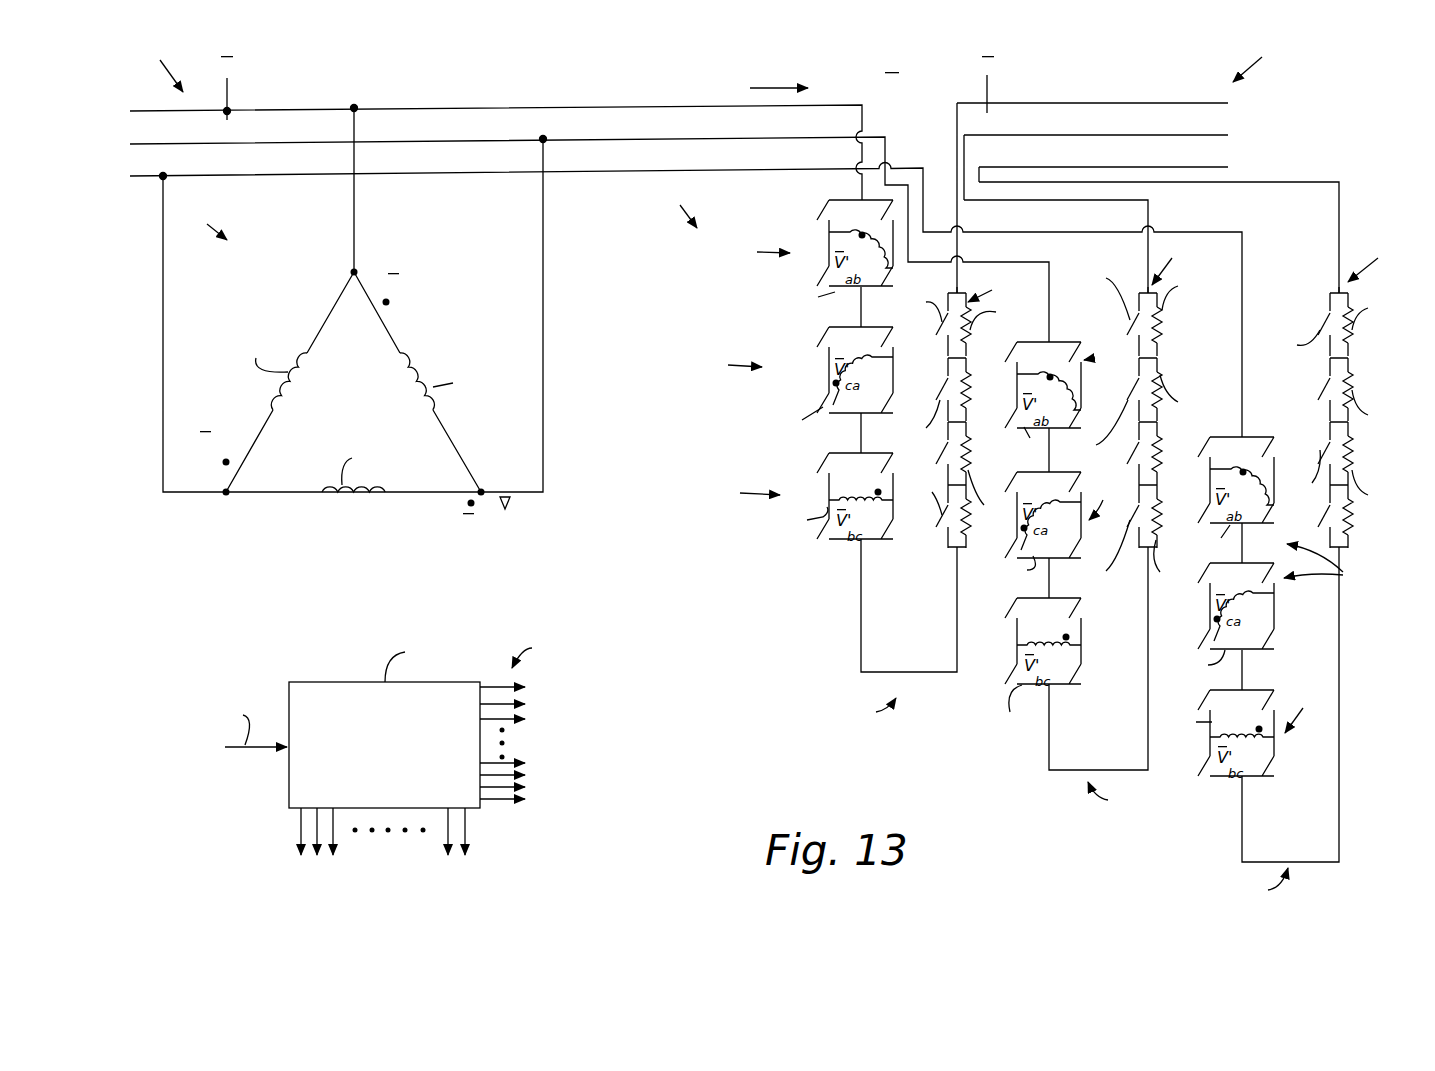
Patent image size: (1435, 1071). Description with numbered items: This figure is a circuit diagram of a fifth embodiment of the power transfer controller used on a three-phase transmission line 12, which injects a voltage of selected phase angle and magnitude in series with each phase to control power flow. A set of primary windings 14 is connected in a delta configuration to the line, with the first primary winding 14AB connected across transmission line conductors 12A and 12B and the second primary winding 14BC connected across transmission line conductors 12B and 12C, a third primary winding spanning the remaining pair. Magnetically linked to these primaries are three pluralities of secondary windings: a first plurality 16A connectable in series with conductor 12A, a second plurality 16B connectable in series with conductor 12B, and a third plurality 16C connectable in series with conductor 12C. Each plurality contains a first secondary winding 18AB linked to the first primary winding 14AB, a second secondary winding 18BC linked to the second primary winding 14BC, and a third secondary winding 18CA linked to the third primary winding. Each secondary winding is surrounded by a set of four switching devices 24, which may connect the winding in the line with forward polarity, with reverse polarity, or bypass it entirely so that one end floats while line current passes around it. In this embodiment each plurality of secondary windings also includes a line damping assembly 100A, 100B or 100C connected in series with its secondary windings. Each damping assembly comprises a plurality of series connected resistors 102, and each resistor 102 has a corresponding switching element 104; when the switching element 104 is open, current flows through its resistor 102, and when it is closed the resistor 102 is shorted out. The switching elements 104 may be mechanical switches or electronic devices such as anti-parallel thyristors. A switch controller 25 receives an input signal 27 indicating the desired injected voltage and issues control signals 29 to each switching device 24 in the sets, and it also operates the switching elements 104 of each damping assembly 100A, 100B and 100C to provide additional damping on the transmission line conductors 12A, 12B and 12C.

The three-phase transmission line 12 is at (732, 243).
The transmission line conductor 12A is at (282, 111).
The transmission line conductor 12B is at (262, 143).
The transmission line conductor 12C is at (246, 175).
The set of primary windings 14 is at (430, 323).
The first primary winding 14AB is at (369, 374).
The second primary winding 14BC is at (366, 470).
The switching devices 24 is at (1035, 488).
The first secondary winding 18AB is at (1023, 375).
The third secondary winding 18CA is at (1015, 502).
The second secondary winding 18BC is at (1017, 617).
The first plurality of secondary windings 16A is at (896, 631).
The second plurality of secondary windings 16B is at (1099, 683).
The third plurality of secondary windings 16C is at (1282, 726).
The line damping assembly 100A is at (996, 411).
The line damping assembly 100B is at (1177, 392).
The line damping assembly 100C is at (1379, 392).
The resistor 102 is at (1183, 431).
The switching element 104 is at (1111, 426).
The switching device controller 25 is at (384, 727).
The input signal 27 is at (251, 727).
The control signals 29 is at (473, 783).